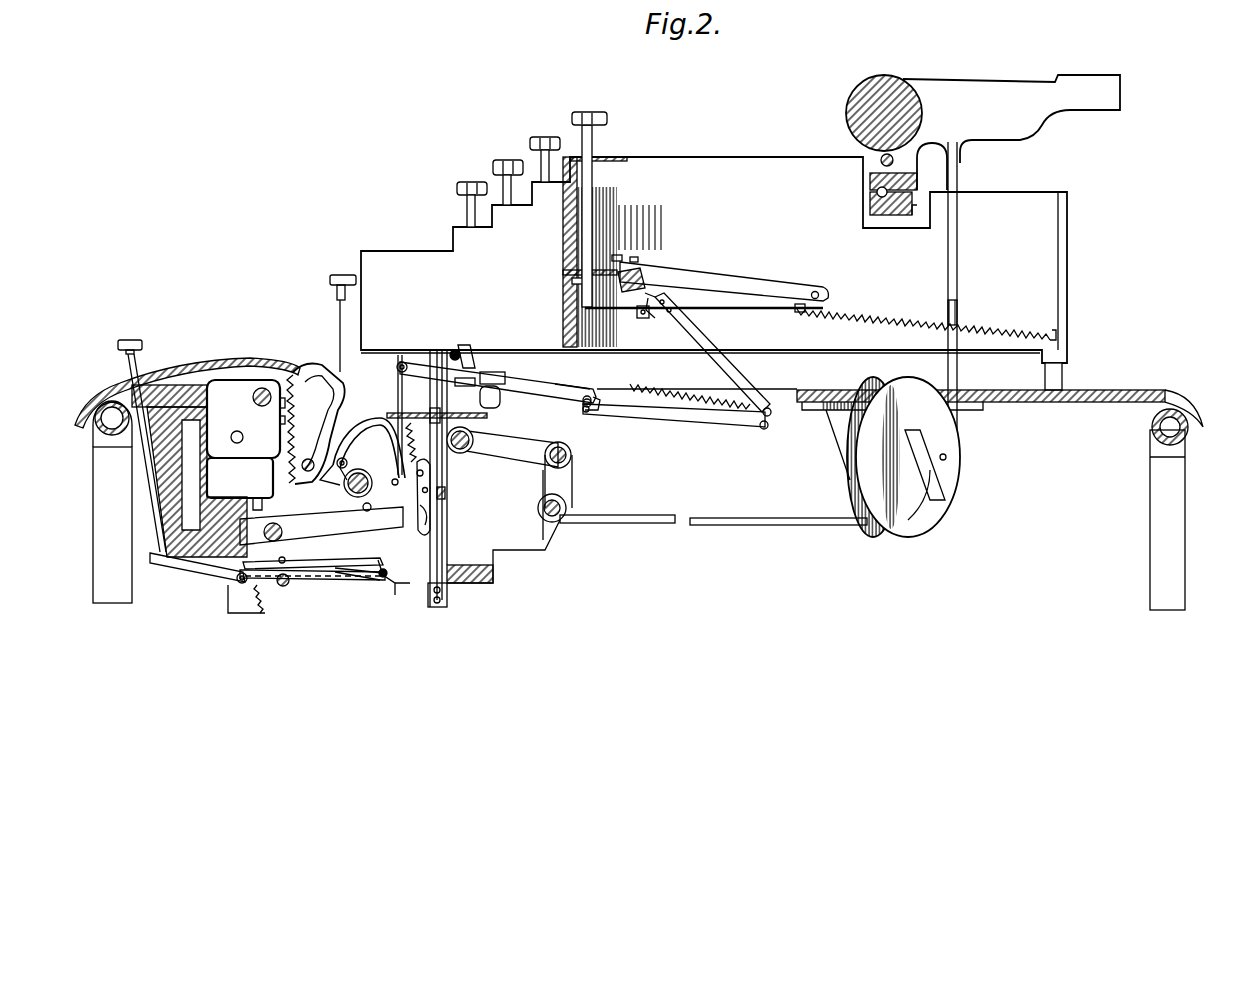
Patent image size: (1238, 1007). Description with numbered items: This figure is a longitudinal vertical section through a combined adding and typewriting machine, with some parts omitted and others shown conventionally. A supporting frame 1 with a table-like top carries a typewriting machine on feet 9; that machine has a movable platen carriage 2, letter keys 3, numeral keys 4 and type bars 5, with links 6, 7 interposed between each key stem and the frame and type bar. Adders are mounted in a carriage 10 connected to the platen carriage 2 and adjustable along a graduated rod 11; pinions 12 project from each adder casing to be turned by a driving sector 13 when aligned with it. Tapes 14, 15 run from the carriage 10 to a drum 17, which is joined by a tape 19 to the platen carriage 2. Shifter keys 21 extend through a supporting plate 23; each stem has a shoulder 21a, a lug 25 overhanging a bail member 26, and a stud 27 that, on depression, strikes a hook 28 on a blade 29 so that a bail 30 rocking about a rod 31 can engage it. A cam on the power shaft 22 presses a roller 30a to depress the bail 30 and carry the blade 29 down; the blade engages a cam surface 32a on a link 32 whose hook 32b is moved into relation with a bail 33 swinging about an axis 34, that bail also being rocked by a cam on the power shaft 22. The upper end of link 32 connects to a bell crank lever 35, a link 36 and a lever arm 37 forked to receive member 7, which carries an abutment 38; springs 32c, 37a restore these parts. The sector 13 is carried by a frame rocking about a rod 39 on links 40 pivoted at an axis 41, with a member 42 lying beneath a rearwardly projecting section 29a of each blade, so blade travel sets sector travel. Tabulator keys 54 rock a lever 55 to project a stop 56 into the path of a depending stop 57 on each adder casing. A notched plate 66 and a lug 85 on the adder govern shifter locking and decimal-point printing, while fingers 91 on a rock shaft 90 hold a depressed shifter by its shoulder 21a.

The supporting frame 1 is at (90, 450).
The platen carriage 2 is at (983, 134).
The letter keys 3 is at (470, 180).
The numeral keys 4 is at (600, 80).
The type bars 5 is at (705, 279).
The link 6 is at (568, 283).
The link 7 is at (723, 309).
The feet 9 is at (560, 367).
The carriage 10 is at (220, 520).
The graduated rod 11 is at (264, 388).
The pinions 12 is at (302, 462).
The driving sector 13 is at (316, 424).
The tape 14 is at (778, 525).
The tape 15 is at (625, 522).
The drum 17 is at (955, 476).
The tape 19 is at (960, 340).
The shifter key 21 is at (330, 283).
The shoulder 21a is at (425, 360).
The power shaft 22 is at (358, 470).
The supporting plate 23 is at (486, 428).
The lug or toe 25 is at (432, 592).
The bail member 26 is at (398, 590).
The stud 27 is at (430, 492).
The hook 28 is at (430, 515).
The blade 29 is at (428, 475).
The rearwardly projecting section 29a is at (478, 410).
The bail 30 is at (436, 495).
The roller 30a is at (346, 505).
The rod 31 is at (283, 538).
The link 32 is at (383, 418).
The cam surface 32a is at (418, 445).
The hook 32b is at (372, 585).
The spring 32c is at (400, 489).
The bail 33 is at (340, 580).
The axis 34 is at (284, 588).
The bell crank lever 35 is at (568, 398).
The link 36 is at (675, 416).
The lever arm 37 is at (730, 366).
The spring 37a is at (683, 398).
The abutment or stop 38 is at (640, 318).
The rod 39 is at (572, 452).
The links 40 is at (572, 480).
The axis 41 is at (567, 507).
The frame member 42 is at (478, 432).
The tabulator keys 54 is at (122, 350).
The lever 55 is at (198, 566).
The stop 56 is at (279, 560).
The depending stop 57 is at (254, 493).
The notched bar or plate 66 is at (256, 406).
The lug 85 is at (280, 412).
The rock shaft 90 is at (456, 350).
The fingers 91 is at (472, 360).